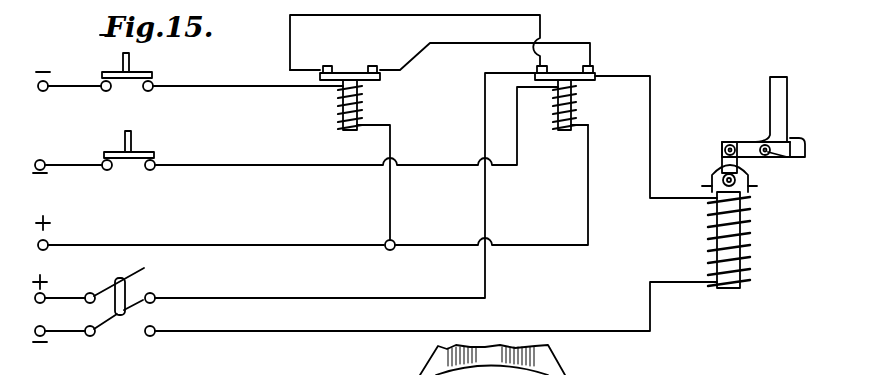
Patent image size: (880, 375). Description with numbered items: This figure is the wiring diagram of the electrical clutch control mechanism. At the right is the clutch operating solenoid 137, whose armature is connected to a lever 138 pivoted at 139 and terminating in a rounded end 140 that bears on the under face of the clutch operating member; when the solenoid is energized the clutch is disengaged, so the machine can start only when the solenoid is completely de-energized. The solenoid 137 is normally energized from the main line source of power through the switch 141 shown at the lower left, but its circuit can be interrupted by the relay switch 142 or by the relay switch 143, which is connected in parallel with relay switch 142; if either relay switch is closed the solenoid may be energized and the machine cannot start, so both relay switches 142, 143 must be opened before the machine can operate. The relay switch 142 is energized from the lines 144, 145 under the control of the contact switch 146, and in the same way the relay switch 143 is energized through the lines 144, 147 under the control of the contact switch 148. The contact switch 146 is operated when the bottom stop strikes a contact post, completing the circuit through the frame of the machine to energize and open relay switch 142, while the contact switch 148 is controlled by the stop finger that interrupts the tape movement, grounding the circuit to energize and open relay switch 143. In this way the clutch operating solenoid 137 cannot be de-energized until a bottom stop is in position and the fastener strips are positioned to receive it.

The clutch operating solenoid 137 is at (741, 289).
The lever 138 is at (751, 147).
The pivot 139 is at (768, 154).
The rounded end 140 is at (795, 140).
The switch 141 is at (107, 322).
The relay switch 142 is at (585, 82).
The relay switch 143 is at (363, 55).
The line 144 is at (265, 245).
The line 145 is at (248, 166).
The contact switch 146 is at (140, 157).
The line 147 is at (201, 88).
The contact switch 148 is at (117, 72).